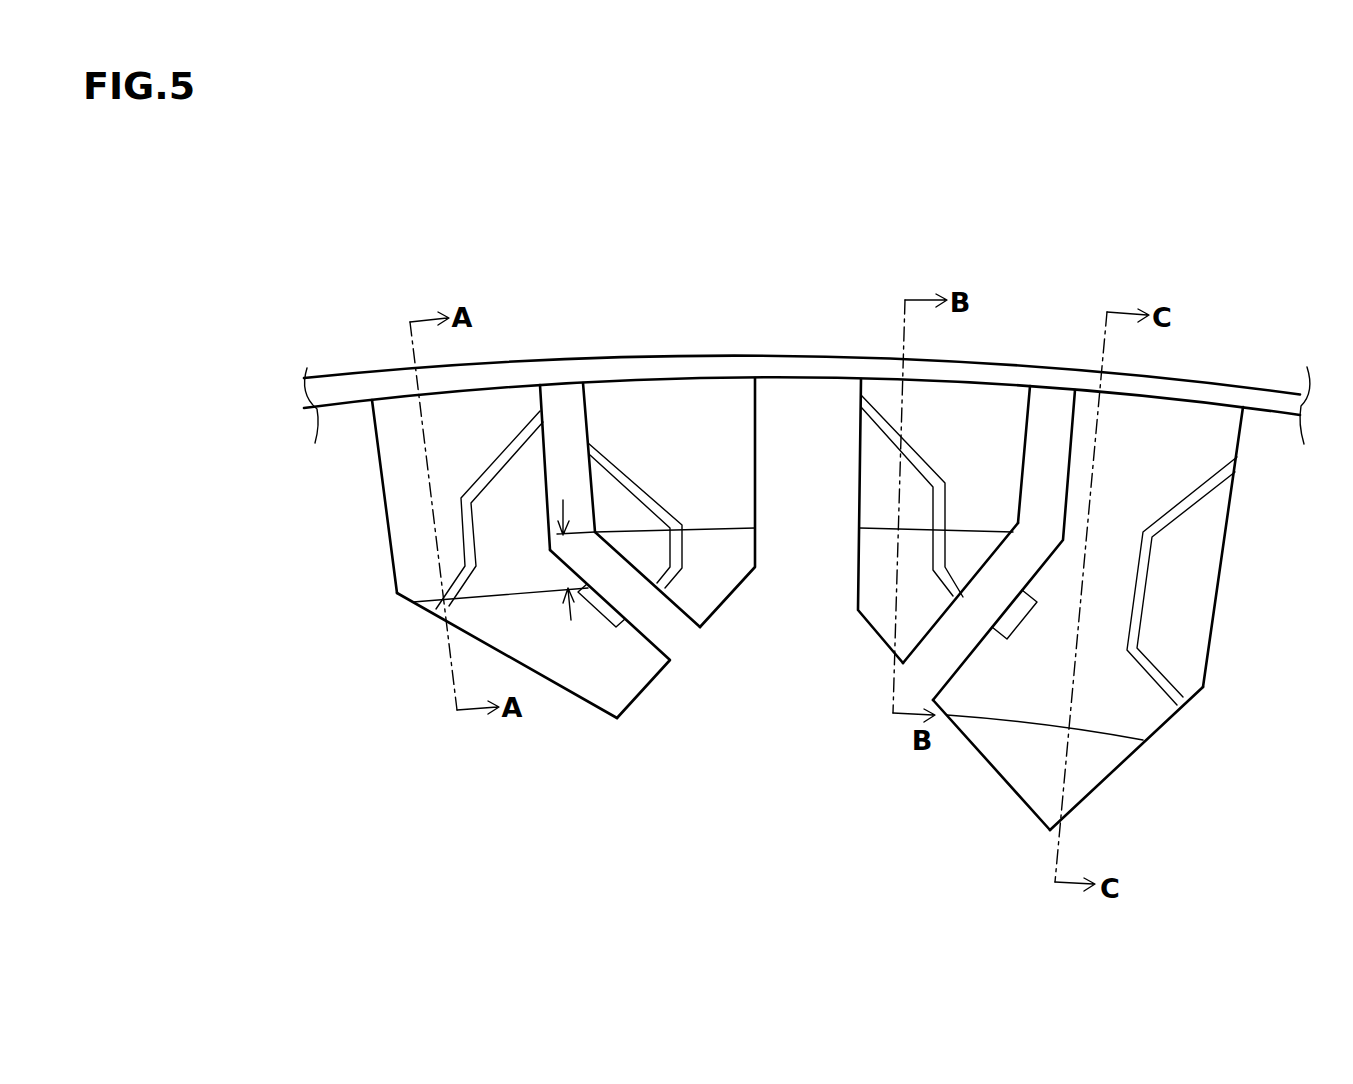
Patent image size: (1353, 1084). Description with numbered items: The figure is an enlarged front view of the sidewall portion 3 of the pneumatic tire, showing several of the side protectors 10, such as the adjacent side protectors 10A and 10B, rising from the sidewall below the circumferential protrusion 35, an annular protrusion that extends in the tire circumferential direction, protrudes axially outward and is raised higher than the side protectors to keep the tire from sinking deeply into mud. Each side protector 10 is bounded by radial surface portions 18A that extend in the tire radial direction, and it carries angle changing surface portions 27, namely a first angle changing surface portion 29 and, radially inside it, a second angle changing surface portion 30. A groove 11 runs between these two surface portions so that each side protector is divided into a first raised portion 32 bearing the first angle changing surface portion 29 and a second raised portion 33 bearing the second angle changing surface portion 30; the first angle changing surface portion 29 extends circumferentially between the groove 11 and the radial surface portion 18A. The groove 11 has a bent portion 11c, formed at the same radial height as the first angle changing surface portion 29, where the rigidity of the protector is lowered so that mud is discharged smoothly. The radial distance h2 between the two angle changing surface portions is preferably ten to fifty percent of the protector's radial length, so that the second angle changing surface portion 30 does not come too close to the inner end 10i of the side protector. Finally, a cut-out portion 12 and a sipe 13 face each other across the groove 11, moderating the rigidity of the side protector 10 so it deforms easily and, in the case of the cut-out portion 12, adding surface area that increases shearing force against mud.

The circumferential protrusion 35 is at (343, 402).
The sidewall portion 3 is at (322, 534).
The second raised portion 33 is at (417, 548).
The radial surface portion 18A is at (377, 463).
The first raised portion 32 is at (663, 442).
The sipe 13 is at (883, 426).
The first angle changing surface portion 29 is at (720, 527).
The second angle changing surface portion 30 is at (520, 598).
The groove 11 is at (673, 633).
The bent portion 11c is at (594, 551).
The cut-out portion 12 is at (603, 610).
The first tooth 10A is at (610, 340).
The second tooth 10B is at (1232, 359).
The side protector 10 is at (1200, 734).
The angle changing surface portion 27 is at (1137, 733).
The inner end 10i is at (1053, 830).
The radial distance h2 is at (563, 520).